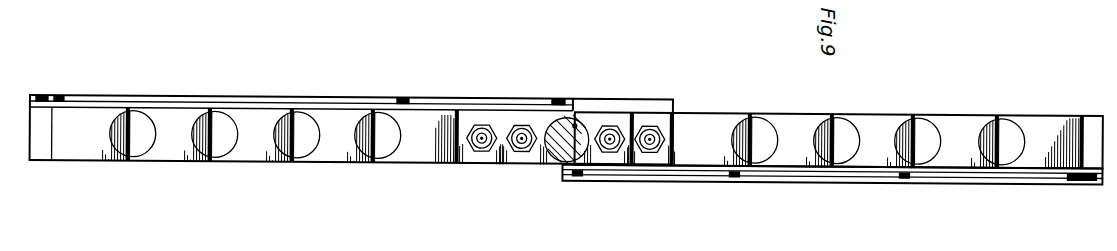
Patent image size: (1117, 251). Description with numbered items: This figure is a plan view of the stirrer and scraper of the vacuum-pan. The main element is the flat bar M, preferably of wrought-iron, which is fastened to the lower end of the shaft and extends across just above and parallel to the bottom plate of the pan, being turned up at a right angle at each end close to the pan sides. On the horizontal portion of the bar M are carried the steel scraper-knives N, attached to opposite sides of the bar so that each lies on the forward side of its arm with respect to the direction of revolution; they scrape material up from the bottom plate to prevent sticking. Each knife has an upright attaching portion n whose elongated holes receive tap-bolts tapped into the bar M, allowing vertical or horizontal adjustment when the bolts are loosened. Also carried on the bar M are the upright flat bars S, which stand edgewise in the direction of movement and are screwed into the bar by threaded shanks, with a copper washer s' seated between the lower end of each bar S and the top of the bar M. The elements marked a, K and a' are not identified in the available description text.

The flat bar M is at (35, 99).
The scraper-knives N is at (267, 100).
The upright flat bars S is at (211, 160).
The binding nut a is at (501, 156).
The disk K is at (562, 156).
The copper washer s' is at (584, 106).
The upright attaching portion n is at (648, 119).
The end bar a' is at (674, 126).